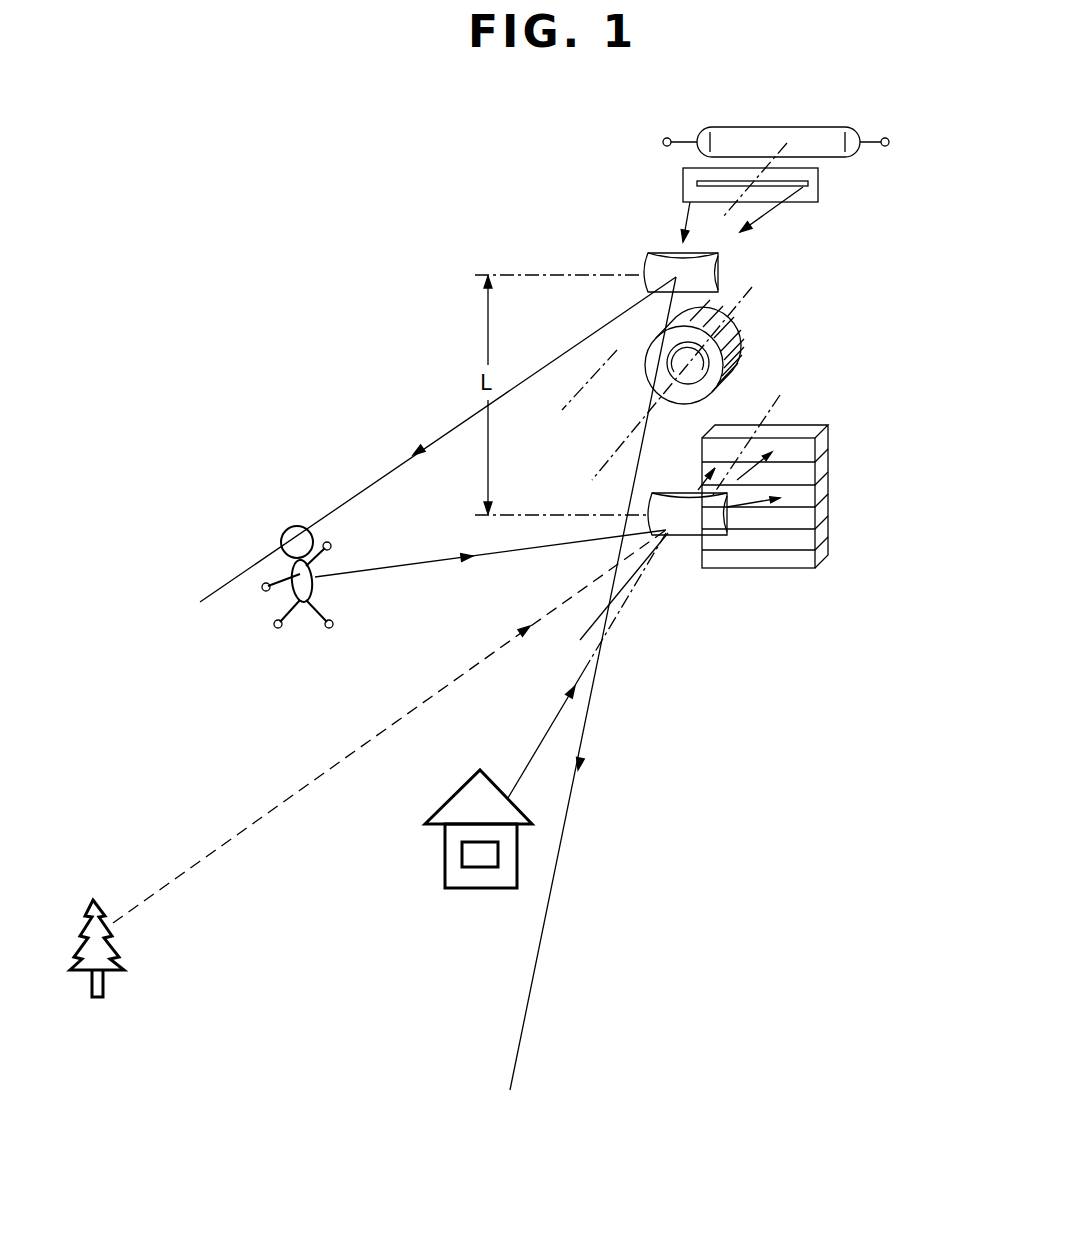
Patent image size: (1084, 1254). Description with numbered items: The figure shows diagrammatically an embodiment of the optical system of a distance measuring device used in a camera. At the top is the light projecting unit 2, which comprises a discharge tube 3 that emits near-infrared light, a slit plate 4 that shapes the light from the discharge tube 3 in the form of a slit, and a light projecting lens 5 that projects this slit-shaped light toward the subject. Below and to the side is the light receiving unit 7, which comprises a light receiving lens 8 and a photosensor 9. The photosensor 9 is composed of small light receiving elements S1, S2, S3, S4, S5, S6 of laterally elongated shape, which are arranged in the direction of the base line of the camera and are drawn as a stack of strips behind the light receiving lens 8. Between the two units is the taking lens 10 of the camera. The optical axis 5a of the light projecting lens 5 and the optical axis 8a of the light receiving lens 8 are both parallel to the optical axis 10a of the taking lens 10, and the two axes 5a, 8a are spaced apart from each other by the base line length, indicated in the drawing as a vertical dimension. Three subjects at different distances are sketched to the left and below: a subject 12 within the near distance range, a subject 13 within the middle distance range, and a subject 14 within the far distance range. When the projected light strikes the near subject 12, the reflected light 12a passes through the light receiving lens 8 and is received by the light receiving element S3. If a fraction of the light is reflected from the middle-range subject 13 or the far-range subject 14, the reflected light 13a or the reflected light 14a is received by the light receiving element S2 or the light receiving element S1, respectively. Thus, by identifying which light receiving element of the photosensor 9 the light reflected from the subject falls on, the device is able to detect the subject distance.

The light projecting unit 2 is at (725, 200).
The discharge tube 3 is at (697, 140).
The slit plate 4 is at (683, 185).
The light projecting lens 5 is at (659, 241).
The optical axis of the light projecting lens 5a is at (585, 384).
The light receiving unit 7 is at (781, 537).
The light receiving lens 8 is at (688, 537).
The optical axis of the light receiving lens 8a is at (778, 398).
The photosensor 9 is at (808, 540).
The light receiving element S1 is at (830, 440).
The light receiving element S2 is at (830, 463).
The light receiving element S3 is at (830, 487).
The light receiving element S4 is at (830, 508).
The light receiving element S5 is at (830, 530).
The light receiving element S6 is at (830, 552).
The taking lens 10 is at (702, 357).
The optical axis of the taking lens 10a is at (603, 460).
The subject 12 is at (297, 585).
The reflected light 12a is at (398, 565).
The subject 13 is at (450, 853).
The reflected light 13a is at (528, 765).
The subject 14 is at (125, 963).
The reflected light 14a is at (187, 873).